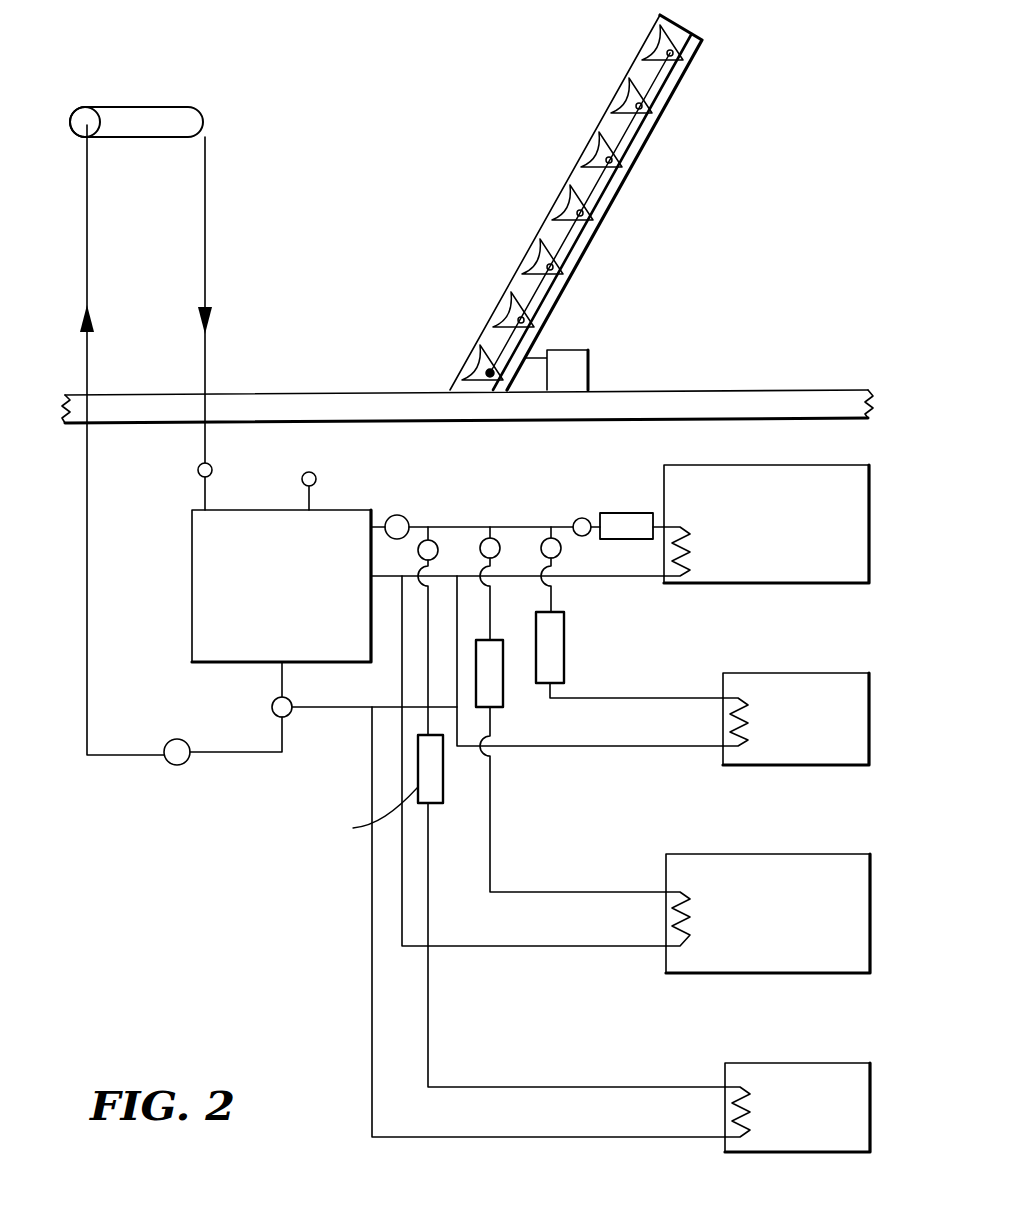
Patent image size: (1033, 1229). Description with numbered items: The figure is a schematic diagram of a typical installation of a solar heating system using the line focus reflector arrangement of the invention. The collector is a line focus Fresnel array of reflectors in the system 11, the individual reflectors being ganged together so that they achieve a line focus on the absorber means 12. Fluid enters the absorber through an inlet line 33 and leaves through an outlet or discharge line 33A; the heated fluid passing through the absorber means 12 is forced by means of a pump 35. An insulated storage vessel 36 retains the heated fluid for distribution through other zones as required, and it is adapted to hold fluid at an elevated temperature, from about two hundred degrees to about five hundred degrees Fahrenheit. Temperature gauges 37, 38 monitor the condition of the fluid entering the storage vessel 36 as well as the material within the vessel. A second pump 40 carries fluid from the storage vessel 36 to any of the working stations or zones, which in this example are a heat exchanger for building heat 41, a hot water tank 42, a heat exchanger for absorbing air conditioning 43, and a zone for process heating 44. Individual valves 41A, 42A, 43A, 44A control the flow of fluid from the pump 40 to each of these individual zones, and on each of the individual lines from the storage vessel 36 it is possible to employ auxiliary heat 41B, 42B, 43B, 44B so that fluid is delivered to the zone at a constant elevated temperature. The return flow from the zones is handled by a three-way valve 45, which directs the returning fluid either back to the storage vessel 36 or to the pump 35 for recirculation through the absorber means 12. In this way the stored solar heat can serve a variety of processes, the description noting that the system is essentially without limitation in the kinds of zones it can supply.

The system 11 is at (640, 216).
The absorber means 12 is at (203, 92).
The inlet line 33 is at (87, 216).
The outlet or discharge line 33A is at (205, 228).
The pump 35 is at (177, 765).
The insulated storage vessel 36 is at (192, 577).
The temperature gauge 37 is at (198, 470).
The temperature gauge 38 is at (312, 472).
The pump 40 is at (405, 517).
The heat exchanger for building heat 41 is at (791, 533).
The valve 41A is at (586, 517).
The auxiliary heat 41B is at (625, 513).
The hot water tank 42 is at (815, 737).
The valve 42A is at (545, 540).
The auxiliary heat 42B is at (552, 645).
The heat exchanger for absorbing air conditioning 43 is at (785, 930).
The valve 43A is at (497, 538).
The auxiliary heat 43B is at (495, 688).
The zone for process heating 44 is at (820, 1118).
The valve 44A is at (436, 544).
The auxiliary heat 44B is at (437, 790).
The three-way valve 45 is at (288, 699).